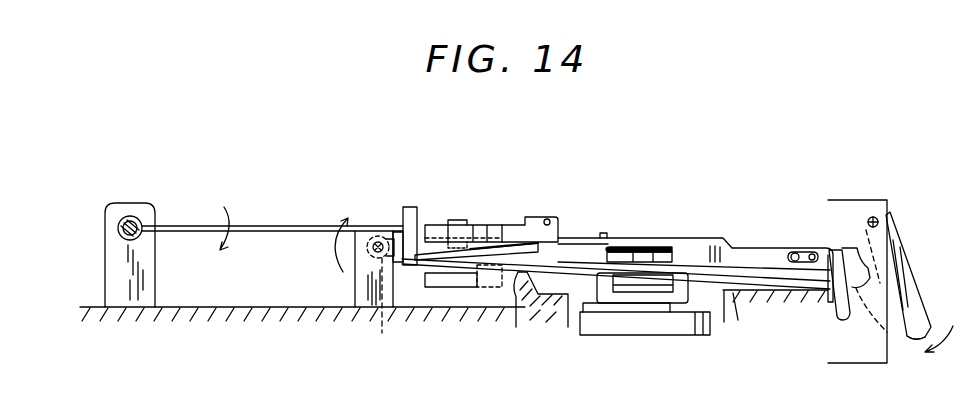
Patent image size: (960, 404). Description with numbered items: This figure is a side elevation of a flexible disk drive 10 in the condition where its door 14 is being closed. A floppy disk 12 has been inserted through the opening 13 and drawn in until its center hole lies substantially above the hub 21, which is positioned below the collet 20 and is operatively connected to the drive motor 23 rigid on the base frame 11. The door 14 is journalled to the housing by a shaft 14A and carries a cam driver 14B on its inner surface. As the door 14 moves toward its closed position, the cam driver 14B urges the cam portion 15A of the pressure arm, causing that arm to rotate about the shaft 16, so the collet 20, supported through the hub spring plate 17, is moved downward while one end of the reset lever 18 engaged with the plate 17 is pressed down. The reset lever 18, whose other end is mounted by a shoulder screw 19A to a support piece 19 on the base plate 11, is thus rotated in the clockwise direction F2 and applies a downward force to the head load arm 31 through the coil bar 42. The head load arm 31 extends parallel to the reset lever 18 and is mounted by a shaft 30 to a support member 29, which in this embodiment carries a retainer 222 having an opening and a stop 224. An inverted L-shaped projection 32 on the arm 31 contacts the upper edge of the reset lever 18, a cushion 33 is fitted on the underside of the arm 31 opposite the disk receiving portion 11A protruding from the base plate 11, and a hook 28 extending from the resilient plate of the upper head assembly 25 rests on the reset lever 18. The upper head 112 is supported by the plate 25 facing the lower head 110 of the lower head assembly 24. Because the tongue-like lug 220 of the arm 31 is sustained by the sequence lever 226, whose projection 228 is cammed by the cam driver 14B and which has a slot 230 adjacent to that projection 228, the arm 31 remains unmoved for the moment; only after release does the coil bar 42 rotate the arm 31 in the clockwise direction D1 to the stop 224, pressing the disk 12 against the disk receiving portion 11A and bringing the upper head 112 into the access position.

The flexible disk drive 10 is at (634, 111).
The base frame 11 is at (197, 348).
The disk receiving portion 11A is at (527, 300).
The floppy disk 12 is at (731, 304).
The opening 13 is at (884, 271).
The door 14 is at (913, 298).
The shaft 14A is at (871, 216).
The cam driver 14B is at (888, 336).
The cam portion 15A is at (860, 290).
The shaft 16 is at (793, 254).
The hub spring plate 17 is at (622, 249).
The reset lever 18 is at (289, 226).
The support piece 19 is at (130, 214).
The shoulder screw 19A is at (142, 224).
The collet 20 is at (660, 282).
The hub 21 is at (604, 296).
The drive motor 23 is at (665, 326).
The lower head assembly 24 is at (425, 280).
The upper head assembly 25 is at (432, 225).
The hook 28 is at (476, 226).
The support member 29 is at (362, 278).
The shaft 30 is at (372, 238).
The head load arm 31 is at (523, 226).
The projection 32 is at (409, 207).
The cushion 33 is at (500, 290).
The coil bar 42 is at (552, 219).
The lower head 110 is at (453, 274).
The upper head 112 is at (456, 220).
The lug 220 is at (488, 228).
The retainer 222 is at (398, 236).
The stop 224 is at (370, 305).
The sequence lever 226 is at (697, 248).
The projection 228 is at (830, 311).
The slot 230 is at (810, 255).
The clockwise direction D1 is at (330, 245).
The clockwise direction F2 is at (239, 221).